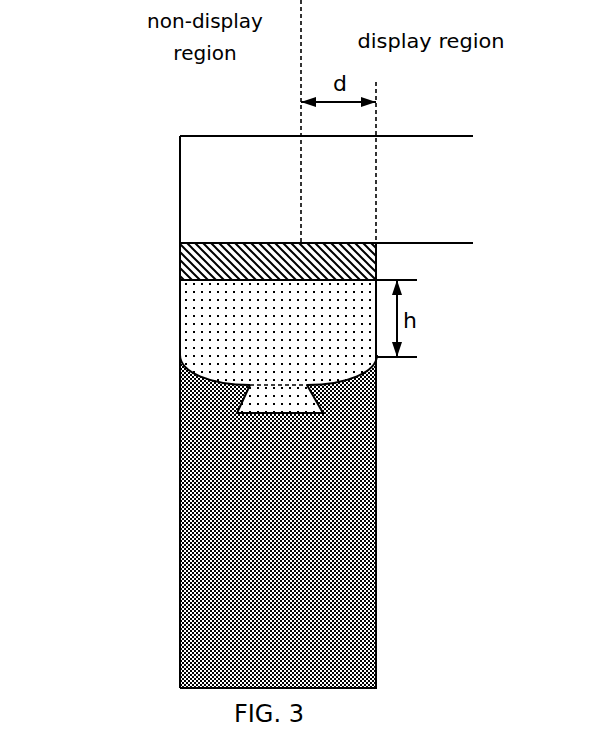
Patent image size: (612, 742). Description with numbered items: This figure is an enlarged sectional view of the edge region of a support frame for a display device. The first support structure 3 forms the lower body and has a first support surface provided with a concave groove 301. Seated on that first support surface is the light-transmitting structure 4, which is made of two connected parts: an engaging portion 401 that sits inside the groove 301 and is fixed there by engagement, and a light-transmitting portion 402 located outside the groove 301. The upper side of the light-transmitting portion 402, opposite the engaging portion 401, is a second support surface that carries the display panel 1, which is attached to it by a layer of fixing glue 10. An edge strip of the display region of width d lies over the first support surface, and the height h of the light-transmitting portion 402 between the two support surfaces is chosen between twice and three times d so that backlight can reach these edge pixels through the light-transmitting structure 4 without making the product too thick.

The display panel 1 is at (195, 192).
The fixing glue 10 is at (194, 265).
The first support structure 3 is at (182, 570).
The light-transmitting structure 4 is at (204, 346).
The light-transmitting portion 402 is at (202, 313).
The engaging portion 401 is at (248, 396).
The groove 301 is at (284, 411).